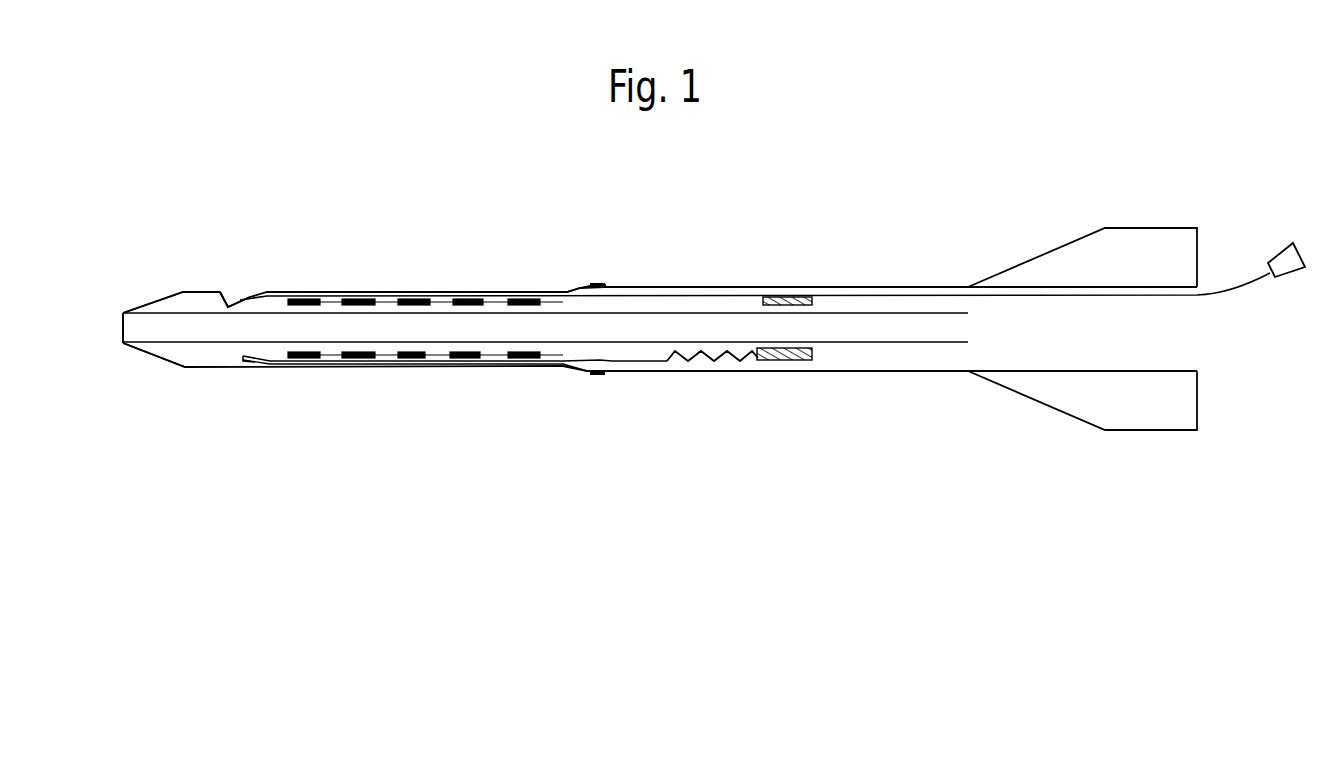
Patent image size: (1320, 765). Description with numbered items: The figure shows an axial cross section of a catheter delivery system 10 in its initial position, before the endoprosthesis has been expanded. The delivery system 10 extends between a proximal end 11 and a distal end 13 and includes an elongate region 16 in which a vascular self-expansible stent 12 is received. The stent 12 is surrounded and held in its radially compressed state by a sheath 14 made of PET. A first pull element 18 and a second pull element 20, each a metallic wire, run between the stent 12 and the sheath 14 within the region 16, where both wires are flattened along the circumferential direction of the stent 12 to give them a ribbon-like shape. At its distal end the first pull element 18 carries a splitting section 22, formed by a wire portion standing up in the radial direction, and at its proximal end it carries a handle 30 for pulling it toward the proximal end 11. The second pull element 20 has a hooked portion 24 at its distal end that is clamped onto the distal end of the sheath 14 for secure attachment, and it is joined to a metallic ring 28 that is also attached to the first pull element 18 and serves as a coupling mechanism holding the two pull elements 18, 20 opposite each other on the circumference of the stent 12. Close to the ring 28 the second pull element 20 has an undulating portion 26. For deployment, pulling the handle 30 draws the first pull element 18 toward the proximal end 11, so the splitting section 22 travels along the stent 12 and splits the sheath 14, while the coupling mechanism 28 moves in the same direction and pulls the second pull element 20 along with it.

The catheter delivery system 10 is at (603, 447).
The proximal end 11 is at (997, 243).
The vascular self-expansible stent 12 is at (408, 354).
The distal end 13 is at (218, 243).
The sheath 14 is at (332, 365).
The elongate region 16 is at (450, 327).
The first pull element 18 is at (588, 293).
The second pull element 20 is at (632, 361).
The splitting section 22 is at (226, 305).
The hooked portion 24 is at (238, 365).
The undulating portion 26 is at (718, 357).
The metallic ring 28 is at (808, 361).
The handle 30 is at (1278, 243).